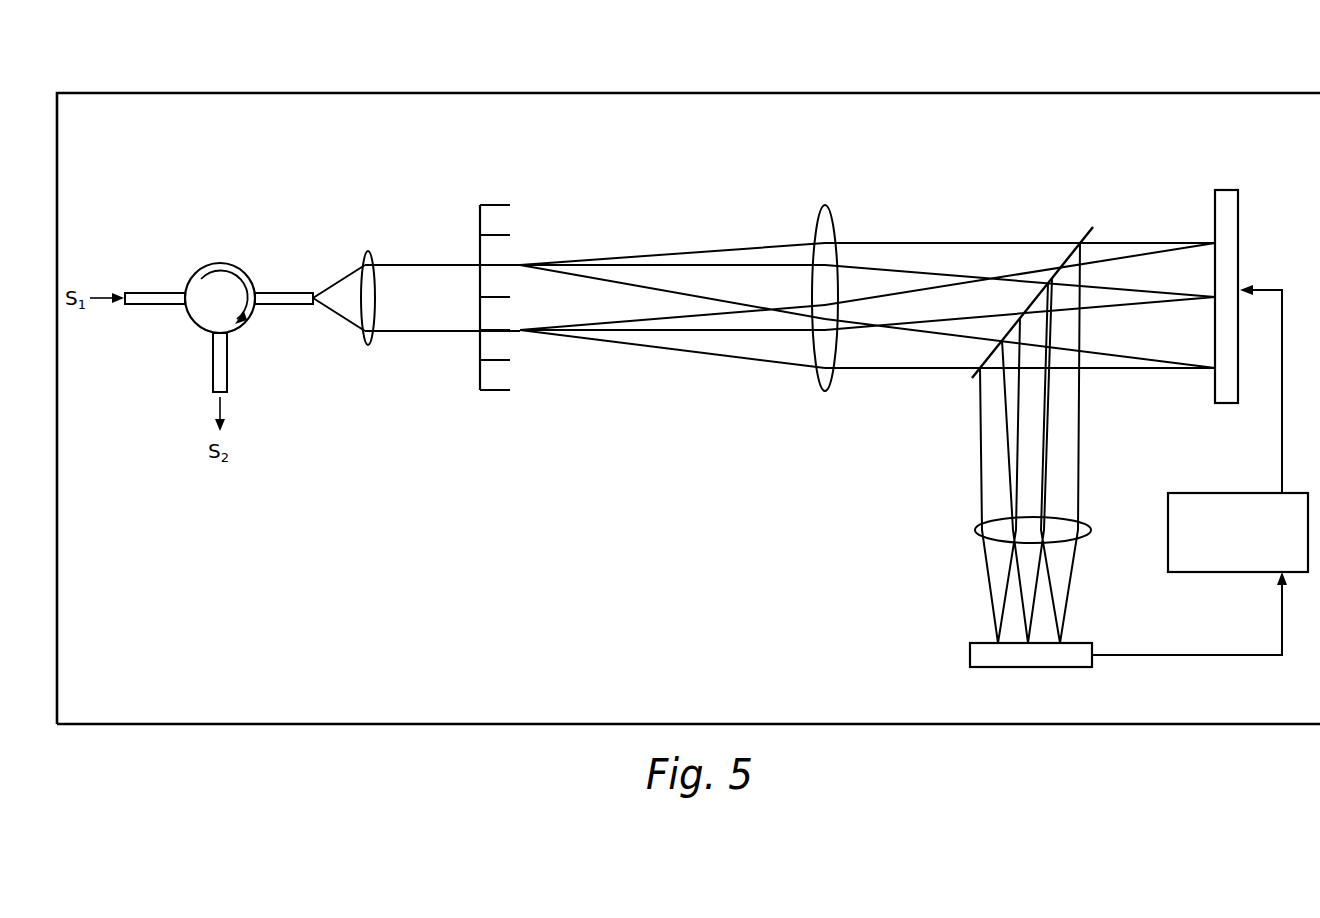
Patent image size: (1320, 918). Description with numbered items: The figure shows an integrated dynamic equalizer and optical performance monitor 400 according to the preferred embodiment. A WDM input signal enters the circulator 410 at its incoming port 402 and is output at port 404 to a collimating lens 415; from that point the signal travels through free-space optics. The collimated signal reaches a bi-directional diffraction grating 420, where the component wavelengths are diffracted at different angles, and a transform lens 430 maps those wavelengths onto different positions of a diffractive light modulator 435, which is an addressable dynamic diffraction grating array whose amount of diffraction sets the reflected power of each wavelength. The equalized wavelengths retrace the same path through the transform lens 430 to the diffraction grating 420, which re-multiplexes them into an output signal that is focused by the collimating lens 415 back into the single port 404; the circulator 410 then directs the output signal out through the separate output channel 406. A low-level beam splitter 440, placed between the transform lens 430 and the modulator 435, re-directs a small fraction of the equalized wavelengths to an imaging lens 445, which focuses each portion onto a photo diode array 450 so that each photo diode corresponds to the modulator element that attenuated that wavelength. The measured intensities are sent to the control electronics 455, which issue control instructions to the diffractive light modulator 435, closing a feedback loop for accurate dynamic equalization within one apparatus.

The optical measurement system 400 is at (190, 93).
The port 402 is at (141, 285).
The port 404 is at (285, 291).
The output channel 406 is at (204, 363).
The circulator 410 is at (220, 263).
The collimating lens 415 is at (368, 252).
The bi-directional diffraction grating 420 is at (495, 204).
The transform lens 430 is at (828, 205).
The diffractive light modulator 435 is at (1228, 190).
The beam splitter 440 is at (1083, 231).
The imaging lens 445 is at (977, 528).
The photo diode array 450 is at (970, 655).
The control electronics 455 is at (1233, 493).